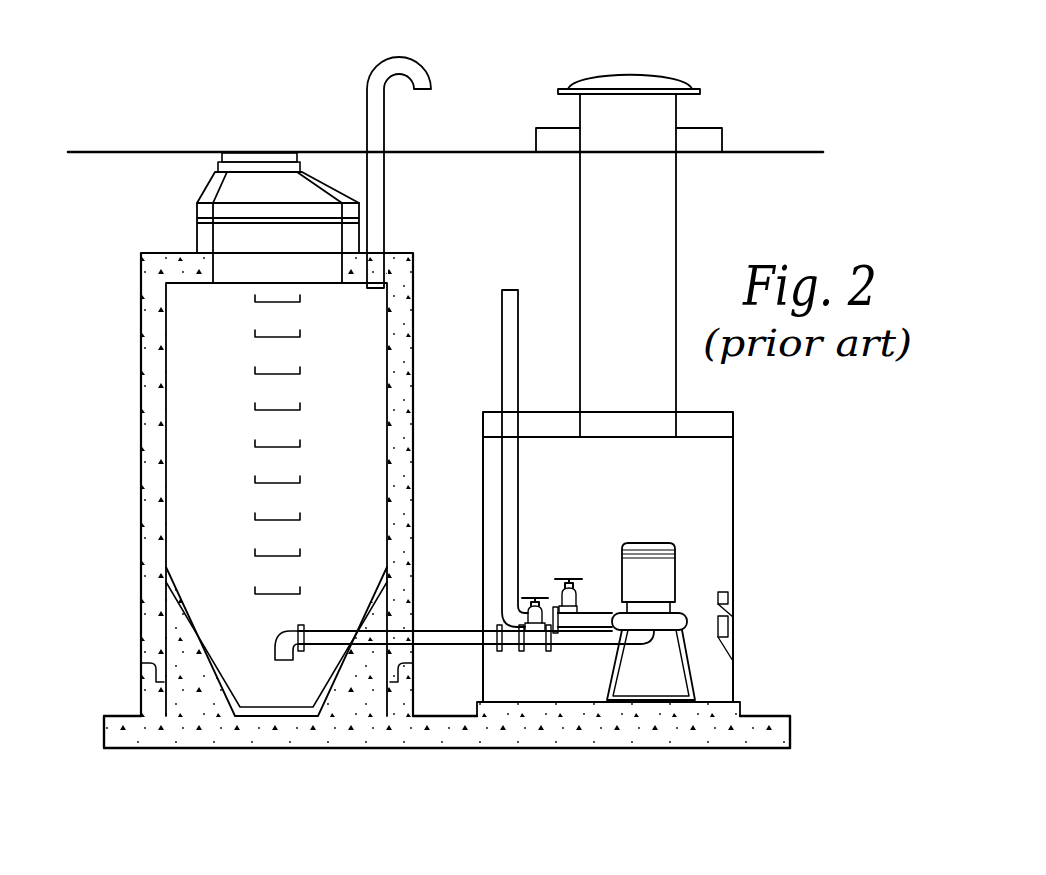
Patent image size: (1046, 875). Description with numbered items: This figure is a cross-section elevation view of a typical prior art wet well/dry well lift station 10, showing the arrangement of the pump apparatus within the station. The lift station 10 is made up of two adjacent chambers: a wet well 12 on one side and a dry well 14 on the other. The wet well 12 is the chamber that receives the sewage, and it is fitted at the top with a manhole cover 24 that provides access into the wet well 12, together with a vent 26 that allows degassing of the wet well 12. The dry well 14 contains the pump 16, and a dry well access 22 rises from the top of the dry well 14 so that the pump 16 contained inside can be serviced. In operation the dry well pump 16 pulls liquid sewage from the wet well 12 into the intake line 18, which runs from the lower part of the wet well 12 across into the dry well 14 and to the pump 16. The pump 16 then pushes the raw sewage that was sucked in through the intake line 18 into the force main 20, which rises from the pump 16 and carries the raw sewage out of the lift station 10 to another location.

The lift station 10 is at (100, 232).
The wet well 12 is at (130, 505).
The dry well 14 is at (757, 477).
The pump 16 is at (675, 575).
The intake line 18 is at (442, 632).
The force main 20 is at (507, 372).
The dry well access 22 is at (698, 88).
The manhole cover 24 is at (248, 148).
The vent 26 is at (367, 110).